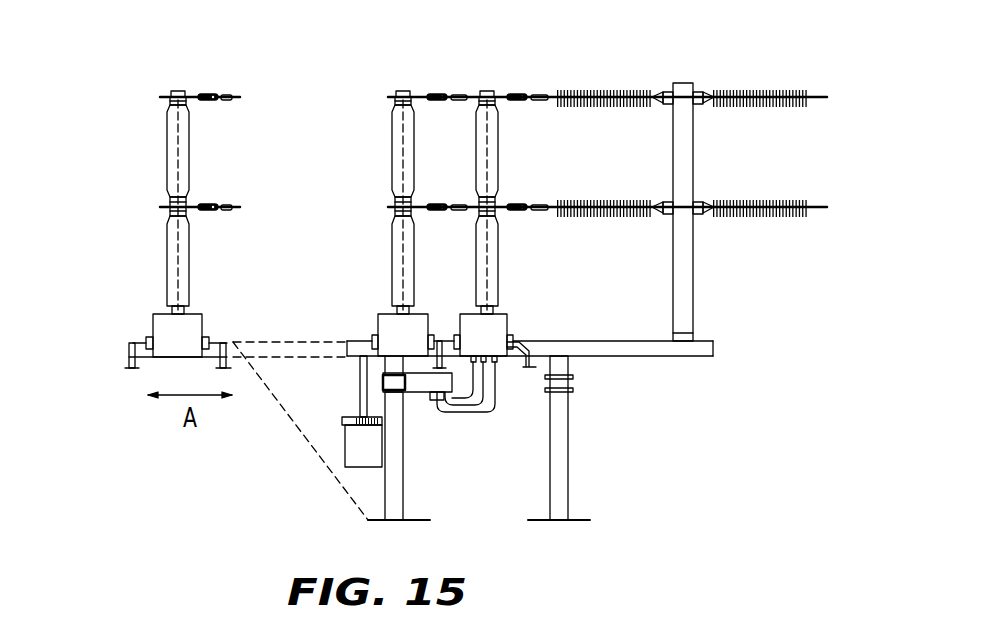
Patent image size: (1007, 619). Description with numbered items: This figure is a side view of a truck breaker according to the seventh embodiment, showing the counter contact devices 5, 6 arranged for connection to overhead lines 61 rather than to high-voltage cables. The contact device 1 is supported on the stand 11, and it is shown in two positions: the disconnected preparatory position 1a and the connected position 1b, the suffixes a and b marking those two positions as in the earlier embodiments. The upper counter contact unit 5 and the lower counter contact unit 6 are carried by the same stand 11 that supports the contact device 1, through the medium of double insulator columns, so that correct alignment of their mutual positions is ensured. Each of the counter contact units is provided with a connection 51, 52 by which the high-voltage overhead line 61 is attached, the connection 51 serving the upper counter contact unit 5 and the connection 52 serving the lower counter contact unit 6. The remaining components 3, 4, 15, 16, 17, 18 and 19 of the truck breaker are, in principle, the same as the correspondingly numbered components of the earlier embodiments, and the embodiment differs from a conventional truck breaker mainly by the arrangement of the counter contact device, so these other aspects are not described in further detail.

The contact device 1 is at (178, 92).
The contact device in disconnected preparatory position 1a is at (400, 91).
The contact device in connected position 1b is at (485, 91).
The truck breaker component 3 is at (222, 96).
The truck breaker component 4 is at (222, 206).
The upper counter contact unit 5 is at (523, 96).
The lower counter contact unit 6 is at (523, 206).
The stand 11 is at (598, 398).
The truck breaker component 15 is at (158, 327).
The truck breaker component 16 is at (507, 320).
The truck breaker component 17 is at (377, 449).
The truck breaker component 18 is at (167, 265).
The truck breaker component 19 is at (167, 154).
The cable connection 51 is at (612, 106).
The cable connection 52 is at (612, 216).
The overhead line 61 is at (812, 96).